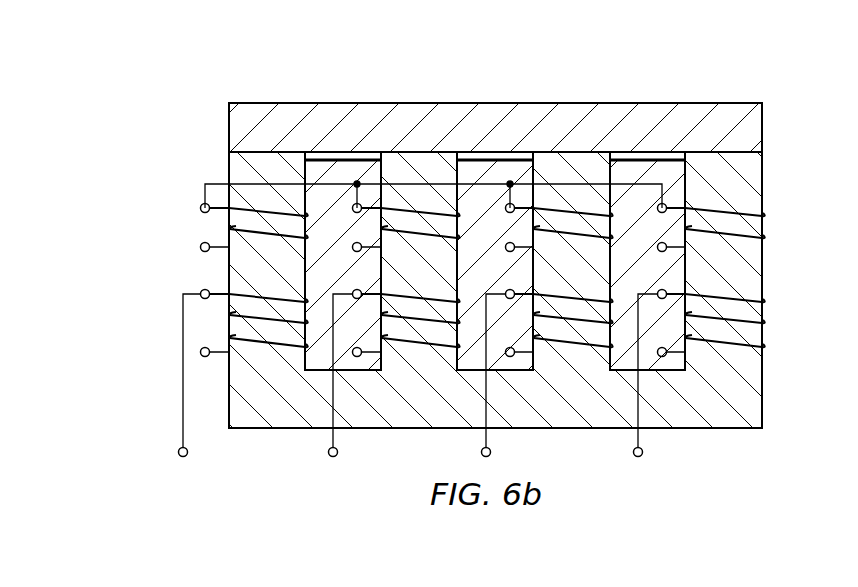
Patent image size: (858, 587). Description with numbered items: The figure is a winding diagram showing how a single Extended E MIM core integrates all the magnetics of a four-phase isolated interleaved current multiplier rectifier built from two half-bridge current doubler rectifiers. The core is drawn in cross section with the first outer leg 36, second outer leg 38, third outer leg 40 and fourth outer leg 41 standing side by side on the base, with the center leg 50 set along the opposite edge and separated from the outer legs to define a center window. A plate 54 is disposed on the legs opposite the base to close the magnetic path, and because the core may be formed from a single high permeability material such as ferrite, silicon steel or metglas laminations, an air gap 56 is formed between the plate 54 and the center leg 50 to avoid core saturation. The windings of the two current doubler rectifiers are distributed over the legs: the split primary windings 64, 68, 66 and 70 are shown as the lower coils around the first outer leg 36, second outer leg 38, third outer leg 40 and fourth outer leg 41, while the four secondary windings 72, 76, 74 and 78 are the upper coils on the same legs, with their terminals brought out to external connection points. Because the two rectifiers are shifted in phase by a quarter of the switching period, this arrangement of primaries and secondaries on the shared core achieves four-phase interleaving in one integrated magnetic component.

The plate 54 is at (455, 110).
The air gap 56 is at (343, 157).
The center leg 50 is at (355, 280).
The first outer leg 36 is at (280, 280).
The second outer leg 38 is at (430, 280).
The third outer leg 40 is at (583, 280).
The fourth outer leg 41 is at (735, 282).
The secondary winding 72 is at (227, 225).
The split primary winding 64 is at (262, 345).
The secondary winding 76 is at (433, 208).
The split primary winding 68 is at (424, 345).
The secondary winding 74 is at (566, 208).
The split primary winding 66 is at (564, 344).
The secondary winding 78 is at (767, 215).
The split primary winding 70 is at (767, 346).